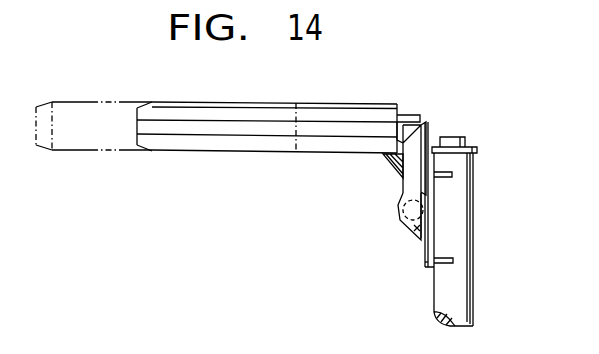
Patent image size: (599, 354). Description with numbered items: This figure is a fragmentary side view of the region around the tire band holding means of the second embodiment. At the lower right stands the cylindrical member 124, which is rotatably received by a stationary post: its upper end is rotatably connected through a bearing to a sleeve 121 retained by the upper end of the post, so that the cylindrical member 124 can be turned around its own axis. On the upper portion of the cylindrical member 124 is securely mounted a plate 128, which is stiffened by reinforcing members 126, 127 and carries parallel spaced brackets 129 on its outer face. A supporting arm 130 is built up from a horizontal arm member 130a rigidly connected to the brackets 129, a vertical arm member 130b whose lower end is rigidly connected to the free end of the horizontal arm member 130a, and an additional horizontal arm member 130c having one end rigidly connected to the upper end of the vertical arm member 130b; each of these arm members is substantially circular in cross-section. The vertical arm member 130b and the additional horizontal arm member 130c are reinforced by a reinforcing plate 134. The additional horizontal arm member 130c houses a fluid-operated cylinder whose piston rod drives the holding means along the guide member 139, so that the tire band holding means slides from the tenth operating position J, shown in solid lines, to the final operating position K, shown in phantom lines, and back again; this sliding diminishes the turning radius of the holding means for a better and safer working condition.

The final operating position K is at (118, 97).
The tenth operating position J is at (289, 100).
The sleeve 121 is at (477, 148).
The cylindrical member 124 is at (466, 212).
The reinforcing member 126 is at (452, 176).
The reinforcing member 127 is at (453, 260).
The plate 128 is at (427, 269).
The bracket 129 is at (414, 229).
The supporting arm 130 is at (399, 164).
The horizontal arm member 130a is at (402, 210).
The vertical arm member 130b is at (427, 135).
The additional horizontal arm member 130c is at (410, 123).
The reinforcing plate 134 is at (382, 168).
The guide member 139 is at (408, 116).